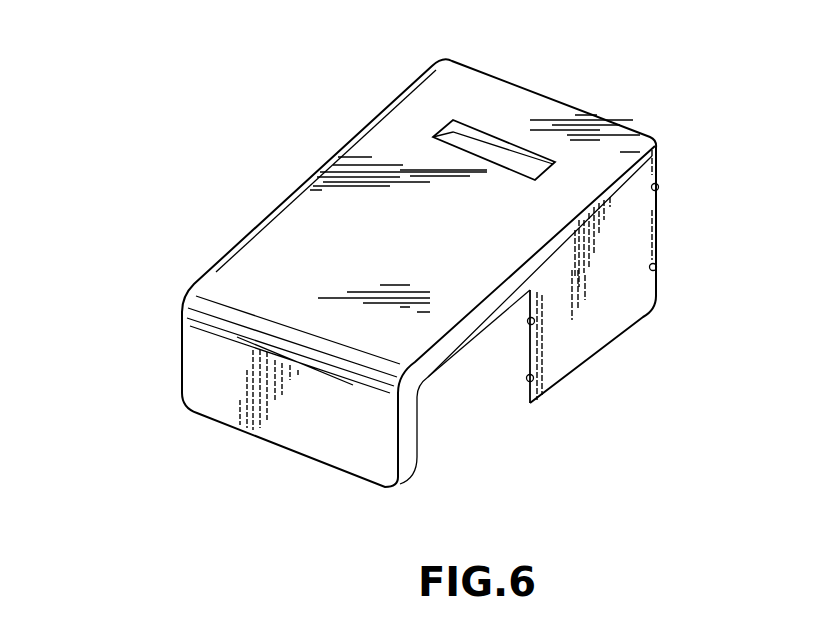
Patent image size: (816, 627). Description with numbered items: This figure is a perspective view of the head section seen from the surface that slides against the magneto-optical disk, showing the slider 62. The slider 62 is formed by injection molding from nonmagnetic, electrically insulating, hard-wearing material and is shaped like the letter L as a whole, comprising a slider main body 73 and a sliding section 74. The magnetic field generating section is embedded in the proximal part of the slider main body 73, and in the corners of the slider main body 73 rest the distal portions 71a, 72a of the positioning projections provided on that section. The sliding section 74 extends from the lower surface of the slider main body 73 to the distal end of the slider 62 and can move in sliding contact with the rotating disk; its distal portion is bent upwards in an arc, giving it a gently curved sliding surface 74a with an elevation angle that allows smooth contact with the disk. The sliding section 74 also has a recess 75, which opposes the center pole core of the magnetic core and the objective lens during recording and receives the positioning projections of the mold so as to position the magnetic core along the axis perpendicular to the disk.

The slider 62 is at (450, 72).
The distal portion of positioning projection 71a is at (656, 268).
The distal portion of positioning projection 72a is at (658, 187).
The slider main body 73 is at (618, 313).
The sliding section 74 is at (345, 150).
The sliding surface 74a is at (292, 215).
The recess 75 is at (505, 144).